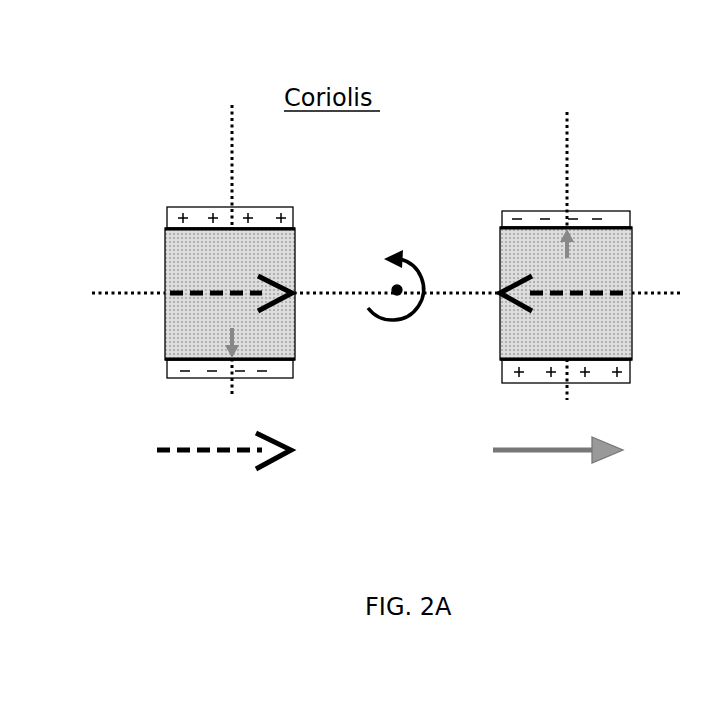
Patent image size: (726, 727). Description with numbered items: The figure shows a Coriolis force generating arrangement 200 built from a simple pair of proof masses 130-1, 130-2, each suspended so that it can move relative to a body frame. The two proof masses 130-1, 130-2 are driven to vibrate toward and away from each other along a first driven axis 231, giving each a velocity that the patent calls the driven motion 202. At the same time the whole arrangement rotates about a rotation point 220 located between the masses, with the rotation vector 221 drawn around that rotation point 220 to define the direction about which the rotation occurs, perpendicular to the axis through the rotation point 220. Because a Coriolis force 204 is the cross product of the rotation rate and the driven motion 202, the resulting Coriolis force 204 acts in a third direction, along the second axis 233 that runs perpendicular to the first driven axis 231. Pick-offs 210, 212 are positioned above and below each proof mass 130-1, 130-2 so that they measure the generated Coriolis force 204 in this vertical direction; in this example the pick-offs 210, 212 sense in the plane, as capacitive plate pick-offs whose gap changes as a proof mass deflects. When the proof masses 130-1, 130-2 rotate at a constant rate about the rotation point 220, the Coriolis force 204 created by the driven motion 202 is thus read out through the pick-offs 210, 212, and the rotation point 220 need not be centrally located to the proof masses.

The proof mass 130-1 is at (176, 263).
The proof mass 130-2 is at (634, 327).
The Coriolis force generating arrangement 200 is at (583, 166).
The driven motion 202 is at (176, 300).
The Coriolis force 204 is at (232, 270).
The pick-off 210 is at (262, 207).
The pick-off 212 is at (283, 373).
The rotation point 220 is at (393, 287).
The rotation vector 221 is at (412, 262).
The first driven axis 231 is at (120, 290).
The second axis 233 is at (228, 160).